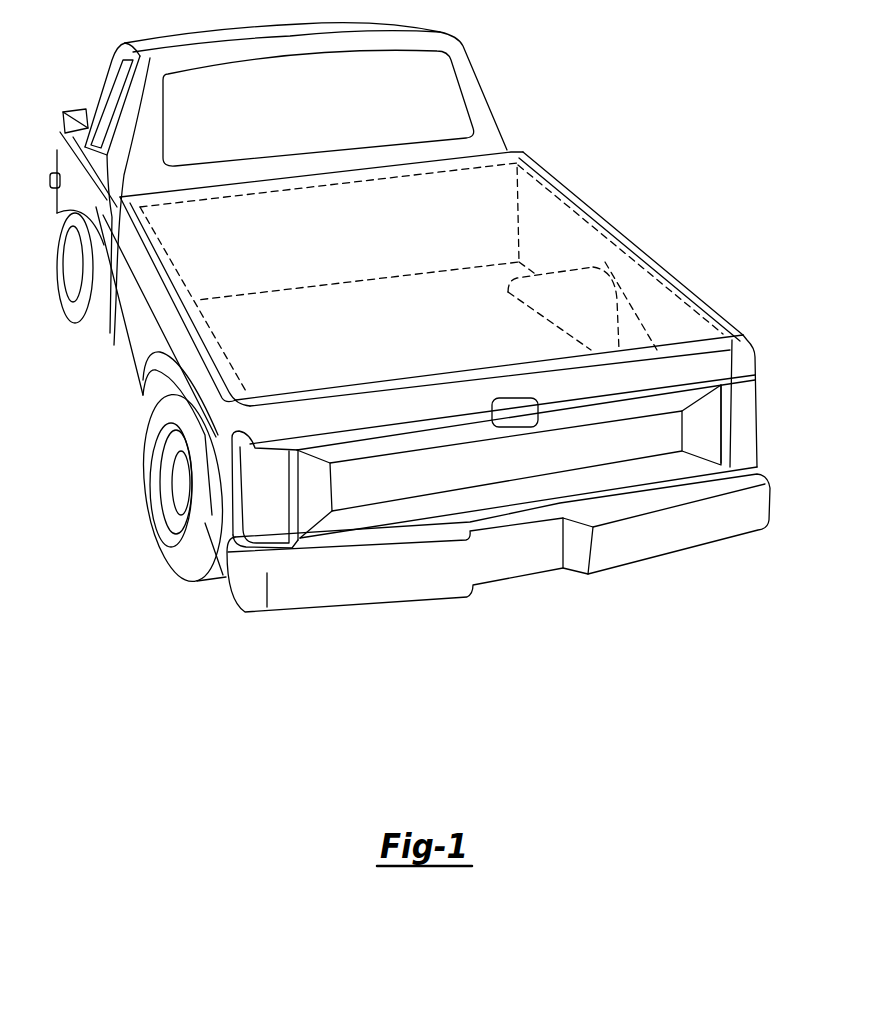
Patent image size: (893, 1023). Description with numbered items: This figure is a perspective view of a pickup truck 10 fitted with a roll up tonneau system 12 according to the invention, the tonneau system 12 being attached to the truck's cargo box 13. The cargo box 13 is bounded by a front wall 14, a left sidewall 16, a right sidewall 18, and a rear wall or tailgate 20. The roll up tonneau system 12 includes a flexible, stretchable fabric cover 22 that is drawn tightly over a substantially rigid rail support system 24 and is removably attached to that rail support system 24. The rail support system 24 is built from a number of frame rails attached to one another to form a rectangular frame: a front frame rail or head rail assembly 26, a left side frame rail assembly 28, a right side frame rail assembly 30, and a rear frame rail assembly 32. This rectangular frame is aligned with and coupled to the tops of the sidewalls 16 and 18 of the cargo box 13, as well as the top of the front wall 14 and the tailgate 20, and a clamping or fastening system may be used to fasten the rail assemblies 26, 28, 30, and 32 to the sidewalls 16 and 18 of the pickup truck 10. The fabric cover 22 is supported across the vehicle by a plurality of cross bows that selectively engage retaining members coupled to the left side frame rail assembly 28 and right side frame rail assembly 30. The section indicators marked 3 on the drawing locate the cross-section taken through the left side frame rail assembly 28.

The pickup truck 10 is at (564, 102).
The roll up tonneau system 12 is at (546, 228).
The cargo box 13 is at (158, 307).
The front wall 14 is at (432, 200).
The left sidewall 16 is at (155, 268).
The right sidewall 18 is at (677, 324).
The tailgate 20 is at (717, 366).
The flexible stretchable fabric cover 22 is at (611, 292).
The rail support system 24 is at (391, 381).
The front frame rail or head rail assembly 26 is at (331, 172).
The left side frame rail assembly 28 is at (199, 320).
The right side frame rail assembly 30 is at (727, 324).
The rear frame rail assembly 32 is at (484, 370).
The section line 3- 3 is at (247, 153).